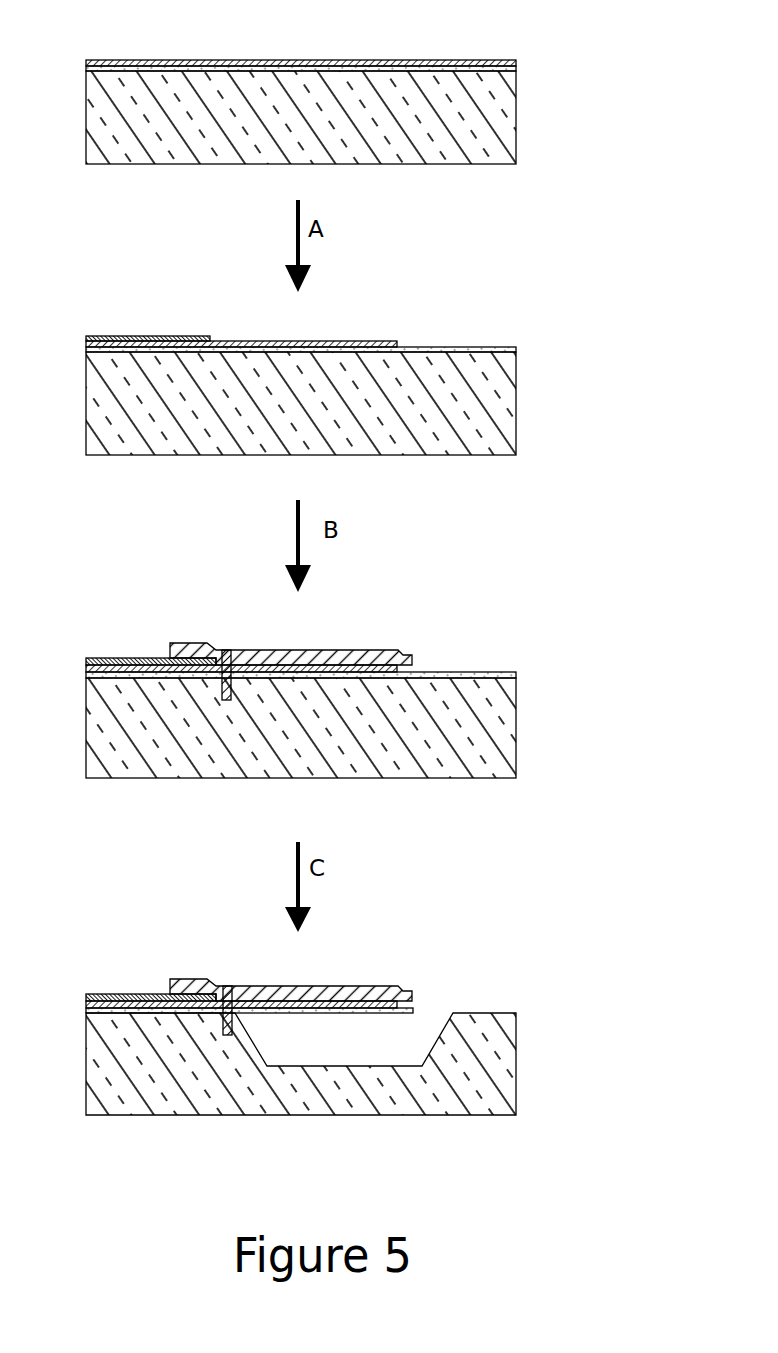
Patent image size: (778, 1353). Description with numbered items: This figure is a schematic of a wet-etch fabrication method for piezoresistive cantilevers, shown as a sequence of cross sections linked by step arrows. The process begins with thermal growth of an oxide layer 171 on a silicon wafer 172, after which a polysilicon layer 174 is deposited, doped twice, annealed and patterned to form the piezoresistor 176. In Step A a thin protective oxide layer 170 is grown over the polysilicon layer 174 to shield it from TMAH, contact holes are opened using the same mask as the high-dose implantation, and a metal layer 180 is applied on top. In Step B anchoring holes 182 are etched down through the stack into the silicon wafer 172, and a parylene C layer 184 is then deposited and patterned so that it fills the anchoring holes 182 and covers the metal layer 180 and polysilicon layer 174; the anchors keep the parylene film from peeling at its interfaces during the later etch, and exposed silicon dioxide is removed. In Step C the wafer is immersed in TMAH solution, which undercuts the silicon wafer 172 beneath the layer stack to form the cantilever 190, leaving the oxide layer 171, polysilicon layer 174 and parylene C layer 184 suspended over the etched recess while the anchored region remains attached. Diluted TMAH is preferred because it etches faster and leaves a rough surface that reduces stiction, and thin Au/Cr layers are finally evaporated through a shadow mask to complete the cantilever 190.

The dielectric layer 170 is at (408, 350).
The oxide layer 171 is at (202, 70).
The silicon wafer 172 is at (393, 147).
The polysilicon layer 174 is at (120, 68).
The piezoresistor 176 is at (382, 305).
The metal layer 180 is at (172, 335).
The anchoring holes 182 is at (227, 700).
The parylene C layer 184 is at (268, 650).
The cantilever 190 is at (456, 961).